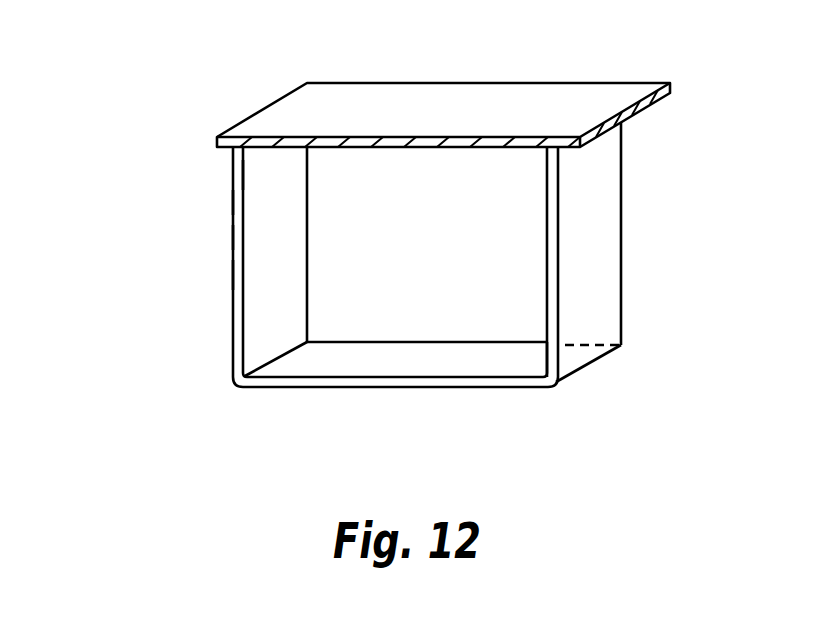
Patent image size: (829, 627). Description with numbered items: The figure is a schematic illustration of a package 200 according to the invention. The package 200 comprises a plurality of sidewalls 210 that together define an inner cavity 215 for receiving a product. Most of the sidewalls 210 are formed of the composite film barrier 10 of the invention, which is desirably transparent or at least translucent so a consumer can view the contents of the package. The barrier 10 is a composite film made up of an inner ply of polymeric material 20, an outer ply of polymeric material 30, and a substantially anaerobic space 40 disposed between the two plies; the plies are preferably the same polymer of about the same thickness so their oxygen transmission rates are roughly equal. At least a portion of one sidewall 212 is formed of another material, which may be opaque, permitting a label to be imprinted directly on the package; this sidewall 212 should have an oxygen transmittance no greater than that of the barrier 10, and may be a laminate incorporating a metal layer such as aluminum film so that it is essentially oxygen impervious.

The package 200 is at (705, 121).
The sidewall 212 is at (447, 108).
The sidewalls 210 is at (402, 227).
The inner cavity 215 is at (532, 327).
The inner ply of polymeric material 20 is at (243, 176).
The substantially anaerobic space 40 is at (235, 200).
The outer ply of polymeric material 30 is at (233, 240).
The composite film barrier 10 is at (233, 273).